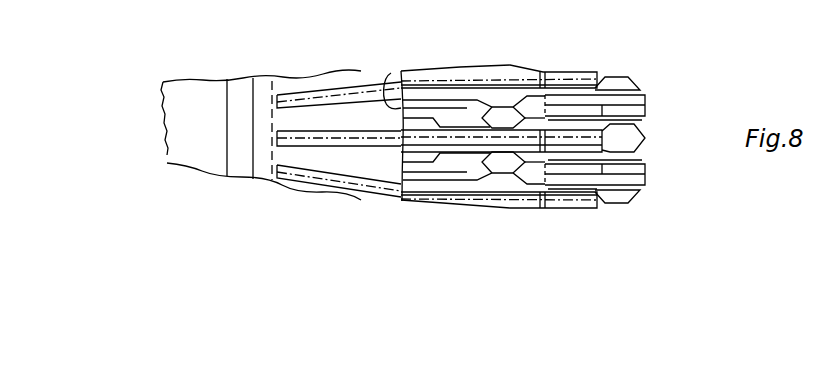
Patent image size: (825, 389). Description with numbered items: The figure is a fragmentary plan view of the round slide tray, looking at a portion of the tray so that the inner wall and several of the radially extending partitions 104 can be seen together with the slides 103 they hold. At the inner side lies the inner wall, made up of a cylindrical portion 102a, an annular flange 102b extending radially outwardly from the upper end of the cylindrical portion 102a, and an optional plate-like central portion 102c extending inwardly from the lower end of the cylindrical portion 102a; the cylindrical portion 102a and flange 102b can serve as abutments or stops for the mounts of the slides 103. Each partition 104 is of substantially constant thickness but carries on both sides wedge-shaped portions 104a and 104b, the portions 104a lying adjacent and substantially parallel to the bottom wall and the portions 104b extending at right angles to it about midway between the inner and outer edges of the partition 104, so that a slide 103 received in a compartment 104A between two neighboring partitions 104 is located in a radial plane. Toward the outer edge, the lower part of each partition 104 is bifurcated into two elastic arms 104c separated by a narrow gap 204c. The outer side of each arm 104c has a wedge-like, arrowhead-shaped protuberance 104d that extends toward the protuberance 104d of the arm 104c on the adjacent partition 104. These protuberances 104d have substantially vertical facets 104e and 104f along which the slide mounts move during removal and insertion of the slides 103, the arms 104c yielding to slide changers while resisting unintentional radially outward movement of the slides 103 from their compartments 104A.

The cylindrical portion 102a is at (226, 99).
The annular flange 102b is at (392, 95).
The plate-like central portion 102c is at (162, 159).
The slide 103 is at (309, 93).
The partition 104 is at (411, 112).
The compartment 104A is at (424, 110).
The wedge-shaped portion 104a is at (468, 118).
The wedge-shaped portion 104b is at (516, 125).
The elastic arm 104c is at (639, 91).
The arrowhead-shaped protuberance 104d is at (618, 80).
The vertical facet 104e is at (603, 200).
The vertical facet 104f is at (630, 200).
The narrow gap 204c is at (613, 194).